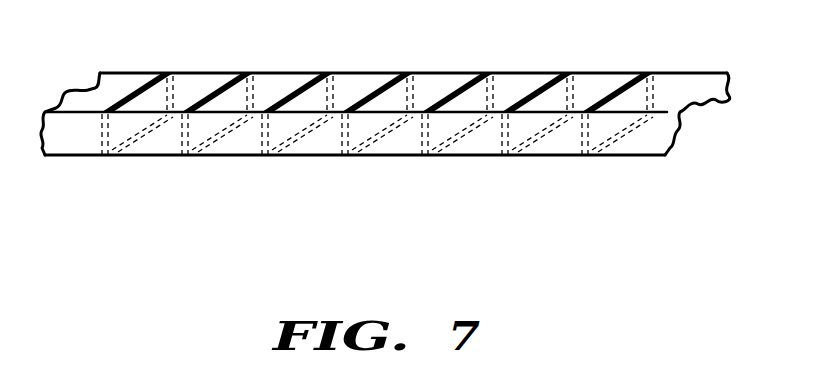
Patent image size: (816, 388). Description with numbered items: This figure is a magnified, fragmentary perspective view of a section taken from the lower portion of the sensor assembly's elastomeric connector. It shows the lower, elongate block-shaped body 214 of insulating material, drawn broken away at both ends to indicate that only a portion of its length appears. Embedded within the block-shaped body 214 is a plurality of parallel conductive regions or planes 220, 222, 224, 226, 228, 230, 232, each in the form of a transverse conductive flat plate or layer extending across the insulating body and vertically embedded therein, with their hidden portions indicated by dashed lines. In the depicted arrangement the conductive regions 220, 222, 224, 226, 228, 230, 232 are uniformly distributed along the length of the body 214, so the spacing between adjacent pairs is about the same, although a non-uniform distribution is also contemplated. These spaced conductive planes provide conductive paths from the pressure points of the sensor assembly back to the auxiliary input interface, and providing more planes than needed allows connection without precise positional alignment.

The block-shaped body 214 is at (682, 123).
The conductive region 220 is at (133, 86).
The conductive region 222 is at (213, 86).
The conductive region 224 is at (293, 86).
The conductive region 226 is at (373, 86).
The conductive region 228 is at (453, 86).
The conductive region 230 is at (533, 86).
The conductive region 232 is at (613, 86).